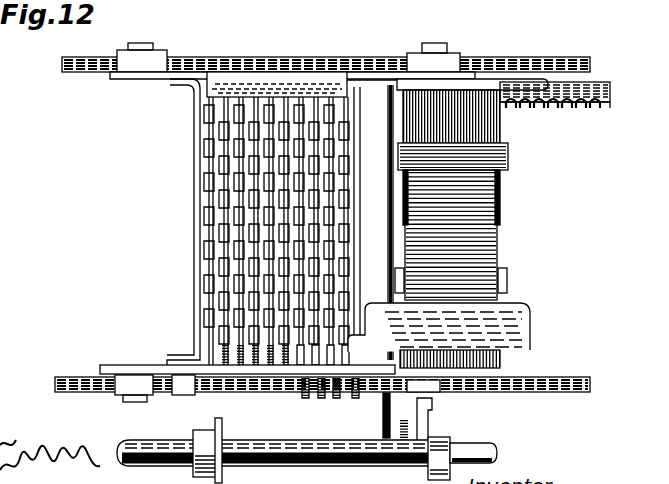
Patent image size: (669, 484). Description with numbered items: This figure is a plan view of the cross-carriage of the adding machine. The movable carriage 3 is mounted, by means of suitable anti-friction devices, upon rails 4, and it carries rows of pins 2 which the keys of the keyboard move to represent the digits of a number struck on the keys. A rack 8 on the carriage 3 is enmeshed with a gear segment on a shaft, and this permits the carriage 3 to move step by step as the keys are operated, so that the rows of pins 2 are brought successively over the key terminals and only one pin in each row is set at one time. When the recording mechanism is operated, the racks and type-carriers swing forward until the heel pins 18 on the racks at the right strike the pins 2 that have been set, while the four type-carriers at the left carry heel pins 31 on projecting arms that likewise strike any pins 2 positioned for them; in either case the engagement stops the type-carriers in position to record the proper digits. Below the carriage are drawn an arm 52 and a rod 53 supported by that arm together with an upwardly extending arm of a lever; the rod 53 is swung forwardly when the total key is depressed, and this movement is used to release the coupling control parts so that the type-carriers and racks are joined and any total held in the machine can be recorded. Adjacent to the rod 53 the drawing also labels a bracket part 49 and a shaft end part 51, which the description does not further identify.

The pins 2 is at (200, 112).
The movable carriage 3 is at (271, 92).
The rails 4 is at (104, 60).
The rack 8 is at (566, 106).
The heel pins 18 is at (247, 389).
The heel pins 31 is at (352, 397).
The bracket 49 is at (428, 398).
The shaft end 51 is at (482, 455).
The arm 52 is at (212, 437).
The rod 53 is at (325, 446).